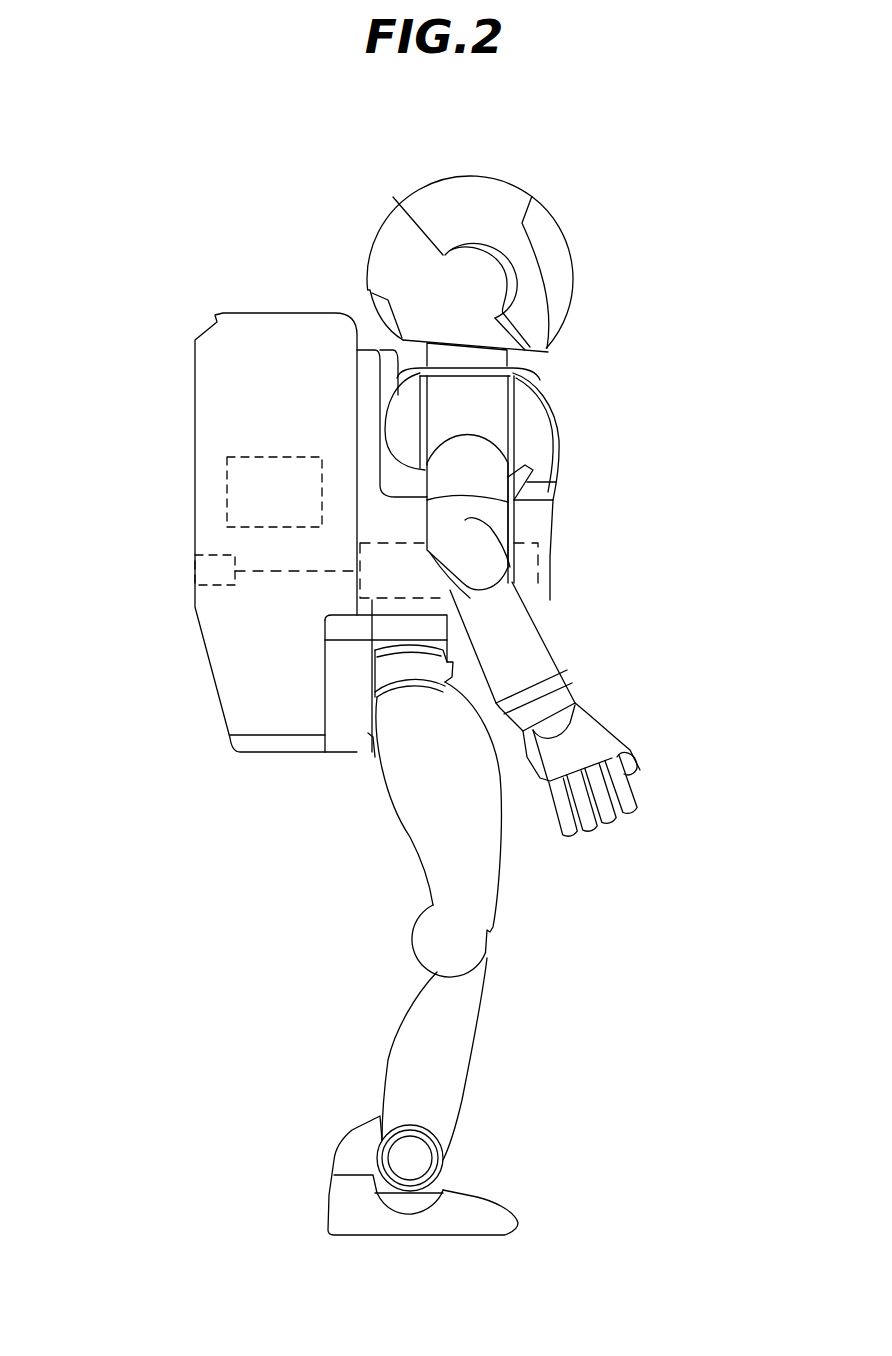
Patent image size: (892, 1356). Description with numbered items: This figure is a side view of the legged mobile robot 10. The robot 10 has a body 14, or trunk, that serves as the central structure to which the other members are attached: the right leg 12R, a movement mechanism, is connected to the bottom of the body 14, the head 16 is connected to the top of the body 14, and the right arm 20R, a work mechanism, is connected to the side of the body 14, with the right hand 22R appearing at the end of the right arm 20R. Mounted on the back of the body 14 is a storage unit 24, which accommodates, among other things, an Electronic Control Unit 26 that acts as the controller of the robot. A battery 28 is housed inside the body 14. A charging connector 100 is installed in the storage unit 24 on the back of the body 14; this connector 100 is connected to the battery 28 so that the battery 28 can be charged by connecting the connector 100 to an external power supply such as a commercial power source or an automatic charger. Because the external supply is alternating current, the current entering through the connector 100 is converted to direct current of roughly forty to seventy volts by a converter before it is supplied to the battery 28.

The legged mobile robot 10 is at (567, 400).
The right leg 12R is at (517, 975).
The body 14 is at (540, 512).
The head 16 is at (440, 180).
The right arm 20R is at (578, 645).
The right hand 22R is at (592, 741).
The storage unit 24 is at (258, 313).
The Electronic Control Unit 26 is at (228, 491).
The battery 28 is at (364, 546).
The charging connector 100 is at (205, 586).